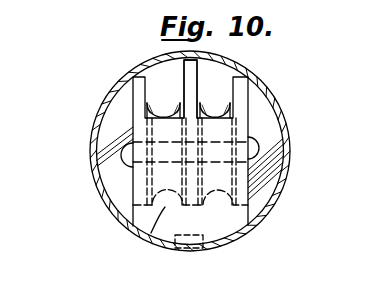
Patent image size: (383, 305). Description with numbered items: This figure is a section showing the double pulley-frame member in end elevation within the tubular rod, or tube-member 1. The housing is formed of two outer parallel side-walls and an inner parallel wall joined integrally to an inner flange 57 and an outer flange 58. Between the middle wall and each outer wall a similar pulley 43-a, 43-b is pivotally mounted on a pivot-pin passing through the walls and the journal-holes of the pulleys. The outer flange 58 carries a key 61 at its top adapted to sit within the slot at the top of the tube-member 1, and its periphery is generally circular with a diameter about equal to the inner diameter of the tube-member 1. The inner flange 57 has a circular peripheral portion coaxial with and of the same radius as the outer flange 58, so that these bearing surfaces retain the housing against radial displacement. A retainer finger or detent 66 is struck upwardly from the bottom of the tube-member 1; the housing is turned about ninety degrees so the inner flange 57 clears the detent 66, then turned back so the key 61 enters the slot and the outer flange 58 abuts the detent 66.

The tube-member 1 is at (288, 137).
The pulley 43-a is at (164, 108).
The pulley 43-b is at (216, 108).
The inner flange 57 is at (141, 237).
The outer flange 58 is at (112, 168).
The key 61 is at (184, 57).
The retainer finger or detent 66 is at (184, 248).